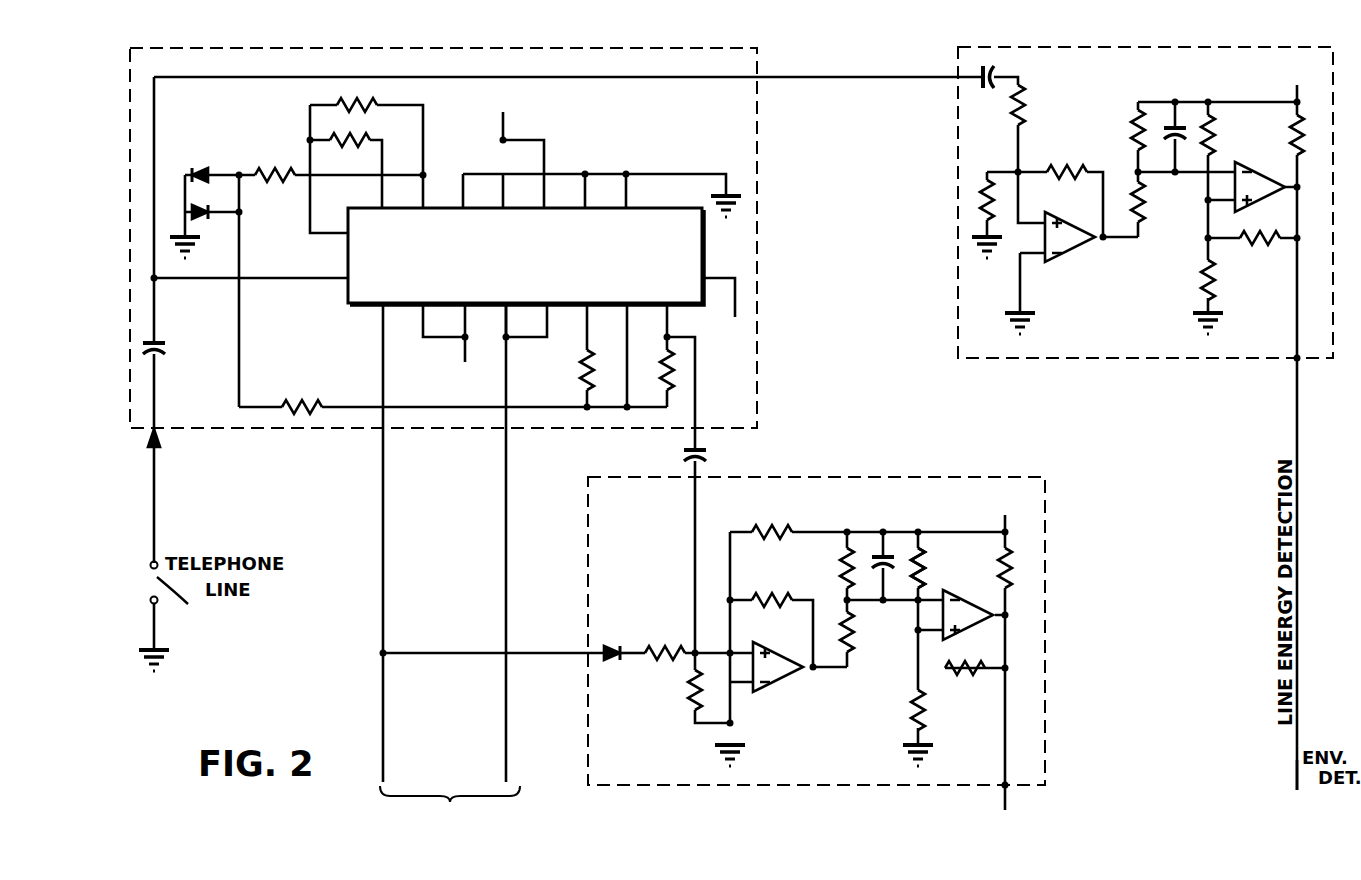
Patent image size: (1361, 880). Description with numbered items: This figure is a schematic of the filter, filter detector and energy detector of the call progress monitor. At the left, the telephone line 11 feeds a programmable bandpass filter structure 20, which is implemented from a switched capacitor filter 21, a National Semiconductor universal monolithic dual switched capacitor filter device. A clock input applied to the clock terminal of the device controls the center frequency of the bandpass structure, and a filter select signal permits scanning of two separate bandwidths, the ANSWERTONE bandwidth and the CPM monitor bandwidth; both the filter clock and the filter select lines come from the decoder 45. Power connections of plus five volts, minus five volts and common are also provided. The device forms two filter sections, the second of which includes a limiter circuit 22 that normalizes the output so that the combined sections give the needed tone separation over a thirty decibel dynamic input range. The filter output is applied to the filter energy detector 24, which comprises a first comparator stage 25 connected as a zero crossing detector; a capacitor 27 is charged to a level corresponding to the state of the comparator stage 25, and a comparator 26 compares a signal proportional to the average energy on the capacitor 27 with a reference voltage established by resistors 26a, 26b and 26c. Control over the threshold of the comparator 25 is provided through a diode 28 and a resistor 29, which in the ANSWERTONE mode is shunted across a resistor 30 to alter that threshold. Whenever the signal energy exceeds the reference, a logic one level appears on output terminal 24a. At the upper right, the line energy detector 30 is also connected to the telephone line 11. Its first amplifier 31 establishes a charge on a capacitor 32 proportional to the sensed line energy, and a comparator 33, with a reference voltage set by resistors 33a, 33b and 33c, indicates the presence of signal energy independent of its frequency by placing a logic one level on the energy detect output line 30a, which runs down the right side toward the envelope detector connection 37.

The telephone line 11 is at (177, 617).
The programmable bandpass filter structure 20 is at (556, 249).
The switched capacitor filter 21 is at (348, 297).
The limiter circuit 22 is at (215, 195).
The filter energy detector 24 is at (844, 636).
The output terminal 24a is at (1003, 790).
The first comparator stage 25 is at (767, 678).
The comparator 26 is at (968, 601).
The resistor 26a is at (967, 687).
The resistor 26b is at (914, 706).
The resistor 26c is at (924, 560).
The capacitor 27 is at (888, 553).
The diode 28 is at (612, 645).
The resistor 29 is at (666, 645).
The line energy detector 30 is at (1121, 418).
The energy detect output line 30a is at (1300, 362).
The first amplifier 31 is at (1070, 248).
The capacitor 32 is at (1179, 126).
The comparator 33 is at (1260, 174).
The resistor 33a is at (1262, 257).
The resistor 33b is at (1206, 272).
The resistor 33c is at (1213, 130).
The envelope detector connection 37 is at (1305, 799).
The decoder 45 is at (472, 569).